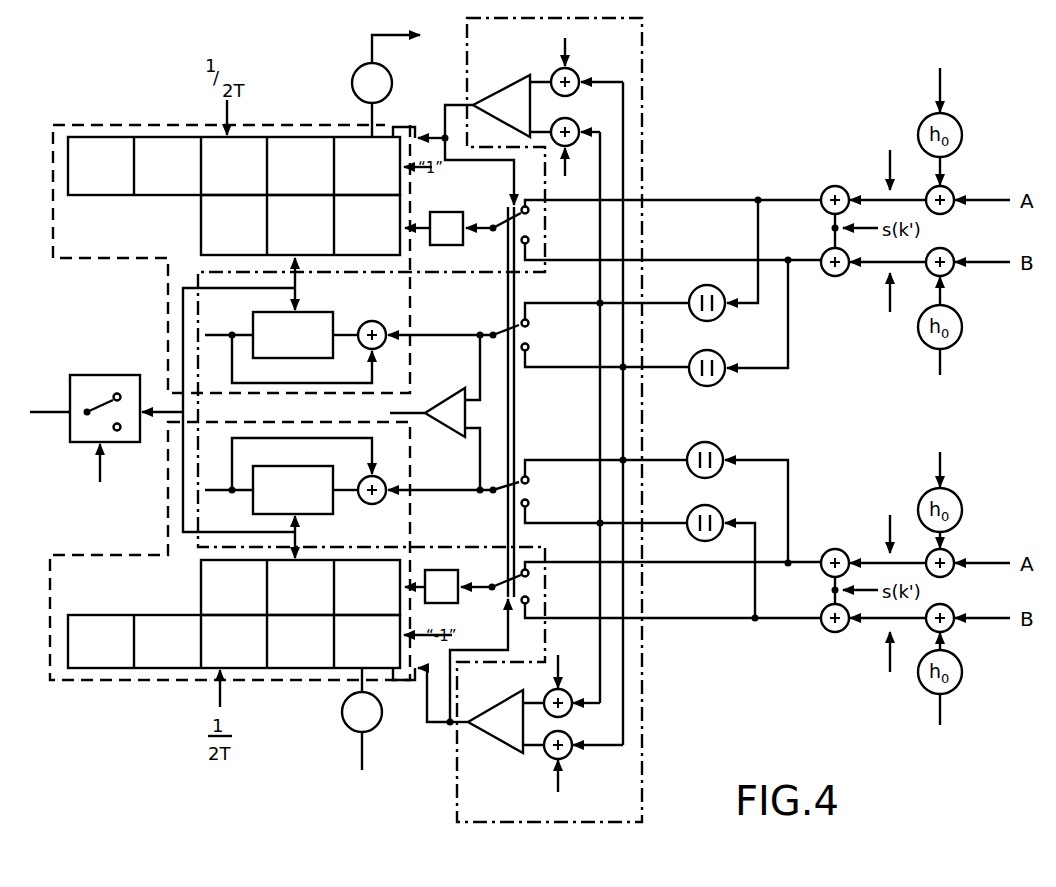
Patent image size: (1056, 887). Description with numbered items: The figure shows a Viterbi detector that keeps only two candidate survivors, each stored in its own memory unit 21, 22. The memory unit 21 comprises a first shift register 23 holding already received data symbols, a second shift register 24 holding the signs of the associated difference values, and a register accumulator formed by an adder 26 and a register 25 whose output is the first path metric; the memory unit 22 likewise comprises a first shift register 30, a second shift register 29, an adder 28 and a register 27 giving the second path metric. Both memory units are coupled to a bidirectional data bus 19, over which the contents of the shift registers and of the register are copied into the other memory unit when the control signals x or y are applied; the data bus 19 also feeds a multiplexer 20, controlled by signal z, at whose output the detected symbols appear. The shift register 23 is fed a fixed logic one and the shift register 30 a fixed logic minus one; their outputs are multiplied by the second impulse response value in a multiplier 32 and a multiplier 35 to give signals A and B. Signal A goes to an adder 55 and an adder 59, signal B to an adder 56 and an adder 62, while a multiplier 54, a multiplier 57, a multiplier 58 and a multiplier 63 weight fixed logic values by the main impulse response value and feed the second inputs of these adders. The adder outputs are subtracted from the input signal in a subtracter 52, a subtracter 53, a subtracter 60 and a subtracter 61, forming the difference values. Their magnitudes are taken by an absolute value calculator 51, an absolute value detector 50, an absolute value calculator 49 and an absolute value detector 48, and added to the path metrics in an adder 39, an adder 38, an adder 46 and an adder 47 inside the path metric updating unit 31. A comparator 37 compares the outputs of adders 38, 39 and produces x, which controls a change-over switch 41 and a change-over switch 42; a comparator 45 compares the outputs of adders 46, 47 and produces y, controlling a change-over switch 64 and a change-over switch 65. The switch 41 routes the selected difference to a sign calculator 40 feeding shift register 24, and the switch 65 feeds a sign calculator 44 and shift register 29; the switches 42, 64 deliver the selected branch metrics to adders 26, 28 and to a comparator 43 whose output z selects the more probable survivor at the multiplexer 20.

The bidirectional data bus 19 is at (183, 325).
The multiplexer 20 is at (104, 375).
The memory unit 21 is at (91, 125).
The memory unit 22 is at (60, 560).
The first shift register 23 is at (166, 197).
The second shift register 24 is at (201, 236).
The register 25 is at (334, 320).
The adder 26 is at (373, 321).
The register 27 is at (334, 471).
The adder 28 is at (365, 503).
The second shift register 29 is at (201, 584).
The first shift register 30 is at (150, 615).
The unit 31 is at (653, 86).
The multiplier 32 is at (352, 84).
The multiplier 35 is at (342, 713).
The comparator 37 is at (497, 90).
The adder 38 is at (577, 70).
The adder 39 is at (578, 125).
The sign calculator 40 is at (455, 212).
The change-over switch 41 is at (508, 222).
The change-over switch 42 is at (505, 340).
The comparator 43 is at (447, 400).
The sign calculator 44 is at (446, 570).
The comparator 45 is at (500, 745).
The adder 46 is at (565, 732).
The adder 47 is at (546, 694).
The absolute value detector 48 is at (717, 507).
The absolute value calculator 49 is at (715, 443).
The absolute value detector 50 is at (717, 356).
The absolute value calculator 51 is at (712, 287).
The subtracter 52 is at (833, 186).
The subtracter 53 is at (836, 277).
The multiplier 54 is at (959, 125).
The adder 55 is at (951, 190).
The adder 56 is at (951, 252).
The multiplier 57 is at (958, 340).
The multiplier 58 is at (958, 500).
The adder 59 is at (952, 553).
The subtracter 60 is at (833, 549).
The subtracter 61 is at (836, 633).
The adder 62 is at (949, 604).
The multiplier 63 is at (958, 688).
The change-over switch 64 is at (506, 480).
The change-over switch 65 is at (508, 597).